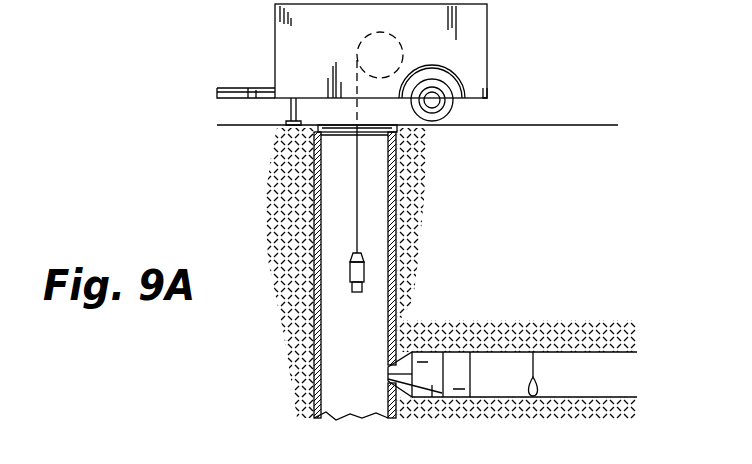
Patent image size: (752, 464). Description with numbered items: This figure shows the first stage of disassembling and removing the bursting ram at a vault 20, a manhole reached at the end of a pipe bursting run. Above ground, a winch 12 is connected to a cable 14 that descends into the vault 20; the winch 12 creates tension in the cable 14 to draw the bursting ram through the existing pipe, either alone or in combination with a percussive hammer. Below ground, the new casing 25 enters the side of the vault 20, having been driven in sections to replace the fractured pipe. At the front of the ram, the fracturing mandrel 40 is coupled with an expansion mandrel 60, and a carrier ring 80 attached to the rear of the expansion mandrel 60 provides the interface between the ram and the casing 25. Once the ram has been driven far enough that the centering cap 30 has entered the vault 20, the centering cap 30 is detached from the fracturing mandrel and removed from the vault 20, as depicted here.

The winch 12 is at (287, 46).
The cable 14 is at (353, 161).
The vault 20 is at (375, 172).
The centering cap 30 is at (349, 278).
The fracturing mandrel 40 is at (405, 350).
The carrier ring 80 is at (465, 365).
The casing 25 is at (507, 360).
The expansion mandrel 60 is at (432, 397).